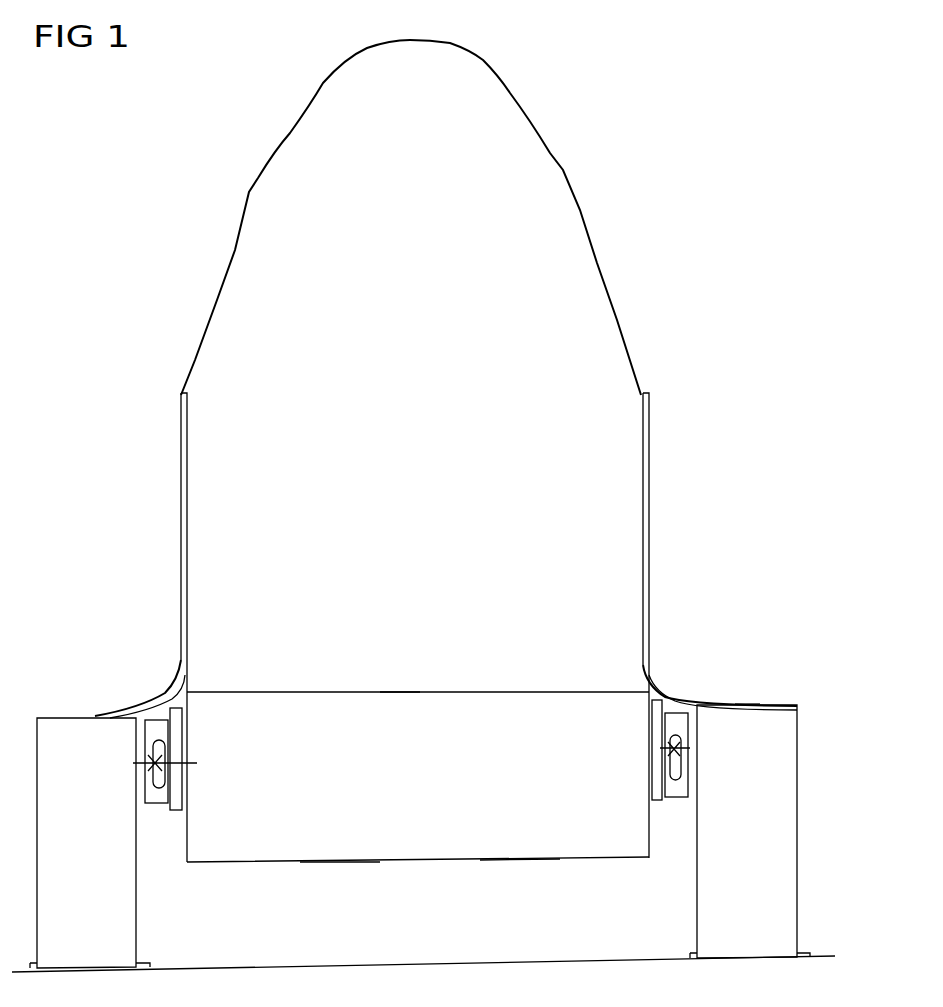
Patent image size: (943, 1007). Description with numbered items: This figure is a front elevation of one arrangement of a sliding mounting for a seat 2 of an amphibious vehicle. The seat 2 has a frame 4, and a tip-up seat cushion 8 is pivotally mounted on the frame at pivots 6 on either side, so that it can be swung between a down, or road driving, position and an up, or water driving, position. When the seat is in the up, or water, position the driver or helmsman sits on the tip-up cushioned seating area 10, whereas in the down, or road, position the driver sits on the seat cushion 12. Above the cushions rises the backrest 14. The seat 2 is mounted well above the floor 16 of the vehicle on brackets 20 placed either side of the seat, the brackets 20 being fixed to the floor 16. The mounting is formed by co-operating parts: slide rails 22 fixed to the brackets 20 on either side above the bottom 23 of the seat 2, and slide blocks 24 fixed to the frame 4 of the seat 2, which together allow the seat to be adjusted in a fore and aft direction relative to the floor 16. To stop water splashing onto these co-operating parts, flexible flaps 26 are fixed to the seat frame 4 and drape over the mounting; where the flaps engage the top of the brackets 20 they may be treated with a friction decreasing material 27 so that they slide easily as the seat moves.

The seat 2 is at (636, 170).
The frame 4 is at (650, 490).
The pivot 6 is at (162, 720).
The tip-up seat cushion 8 is at (424, 800).
The tip-up cushioned seating area 10 is at (508, 818).
The seat cushion 12 is at (398, 688).
The backrest 14 is at (422, 460).
The floor 16 is at (607, 913).
The bracket 20 is at (67, 717).
The slide rail 22 is at (197, 763).
The bottom of seat 23 is at (340, 868).
The slide block 24 is at (153, 735).
The flexible flap 26 is at (140, 703).
The friction decreasing material 27 is at (743, 700).